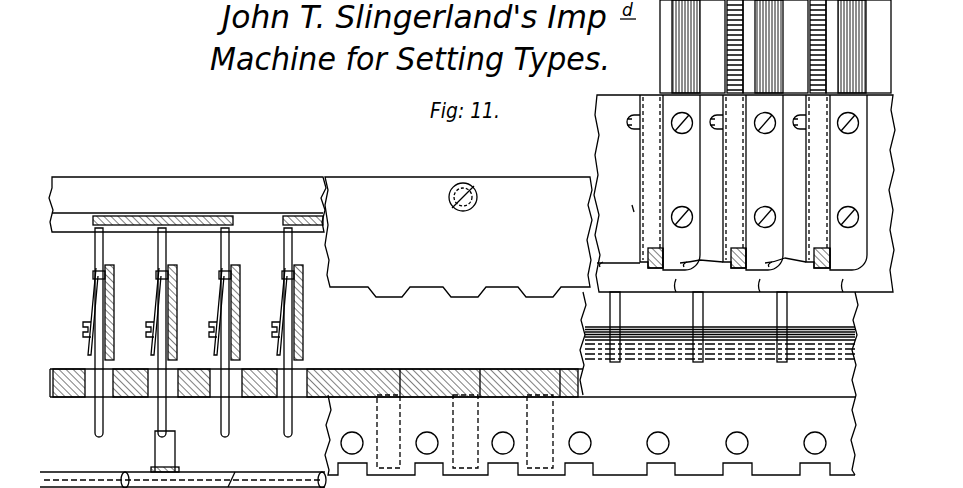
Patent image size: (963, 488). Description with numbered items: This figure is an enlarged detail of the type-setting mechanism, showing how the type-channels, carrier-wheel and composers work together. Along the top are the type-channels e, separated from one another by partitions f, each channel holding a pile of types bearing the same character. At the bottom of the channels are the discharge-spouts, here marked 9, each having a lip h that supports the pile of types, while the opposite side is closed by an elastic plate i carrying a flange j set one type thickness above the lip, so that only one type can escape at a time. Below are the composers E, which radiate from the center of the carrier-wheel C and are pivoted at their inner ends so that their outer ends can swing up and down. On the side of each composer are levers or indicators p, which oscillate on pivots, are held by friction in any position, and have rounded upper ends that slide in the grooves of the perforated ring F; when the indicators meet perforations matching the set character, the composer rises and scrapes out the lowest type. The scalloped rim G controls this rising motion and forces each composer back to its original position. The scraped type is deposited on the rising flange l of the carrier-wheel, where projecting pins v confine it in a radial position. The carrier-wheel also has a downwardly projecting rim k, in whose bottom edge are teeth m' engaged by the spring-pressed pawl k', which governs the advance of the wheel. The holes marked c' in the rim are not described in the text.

The perforated ring F is at (187, 204).
The composer E is at (199, 312).
The lever or indicator p is at (188, 332).
The pawl k' is at (165, 451).
The scalloped rim G is at (458, 237).
The partition f is at (775, 46).
The type-channel e is at (776, 46).
The screw plates and strips 9 is at (747, 182).
The elastic plate i is at (717, 212).
The flange j is at (701, 262).
The lip h is at (735, 280).
The projecting pin v is at (765, 284).
The carrier-wheel C is at (719, 383).
The rising flange l is at (720, 327).
The holes c' is at (584, 435).
The teeth m' is at (580, 440).
The rim k is at (700, 428).